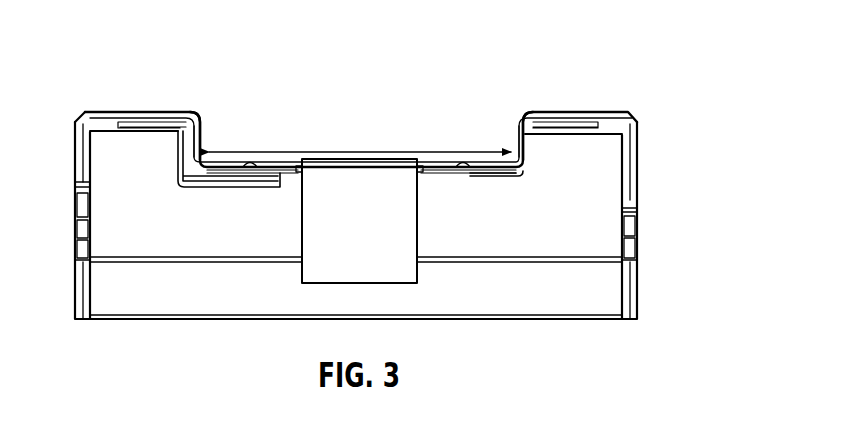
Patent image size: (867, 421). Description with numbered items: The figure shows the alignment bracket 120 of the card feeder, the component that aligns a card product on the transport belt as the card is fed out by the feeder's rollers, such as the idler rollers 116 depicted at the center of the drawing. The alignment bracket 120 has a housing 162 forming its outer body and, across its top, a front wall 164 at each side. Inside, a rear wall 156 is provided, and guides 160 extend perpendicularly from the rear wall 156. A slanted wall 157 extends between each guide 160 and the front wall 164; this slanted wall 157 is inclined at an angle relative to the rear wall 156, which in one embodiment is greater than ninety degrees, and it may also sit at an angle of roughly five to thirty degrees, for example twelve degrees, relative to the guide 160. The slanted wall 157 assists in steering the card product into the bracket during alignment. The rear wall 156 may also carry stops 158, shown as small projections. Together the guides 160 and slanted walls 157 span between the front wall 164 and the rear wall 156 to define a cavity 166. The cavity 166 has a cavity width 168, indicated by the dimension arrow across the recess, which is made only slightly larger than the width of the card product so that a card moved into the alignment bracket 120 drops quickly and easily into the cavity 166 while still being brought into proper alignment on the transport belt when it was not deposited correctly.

The alignment bracket 120 is at (627, 40).
The idler rollers 116 is at (338, 230).
The rear wall 156 is at (218, 168).
The slanted wall 157 is at (210, 127).
The stops 158 is at (252, 160).
The guides 160 is at (208, 136).
The housing 162 is at (640, 178).
The front wall 164 is at (118, 110).
The cavity 166 is at (399, 138).
The cavity width 168 is at (338, 147).